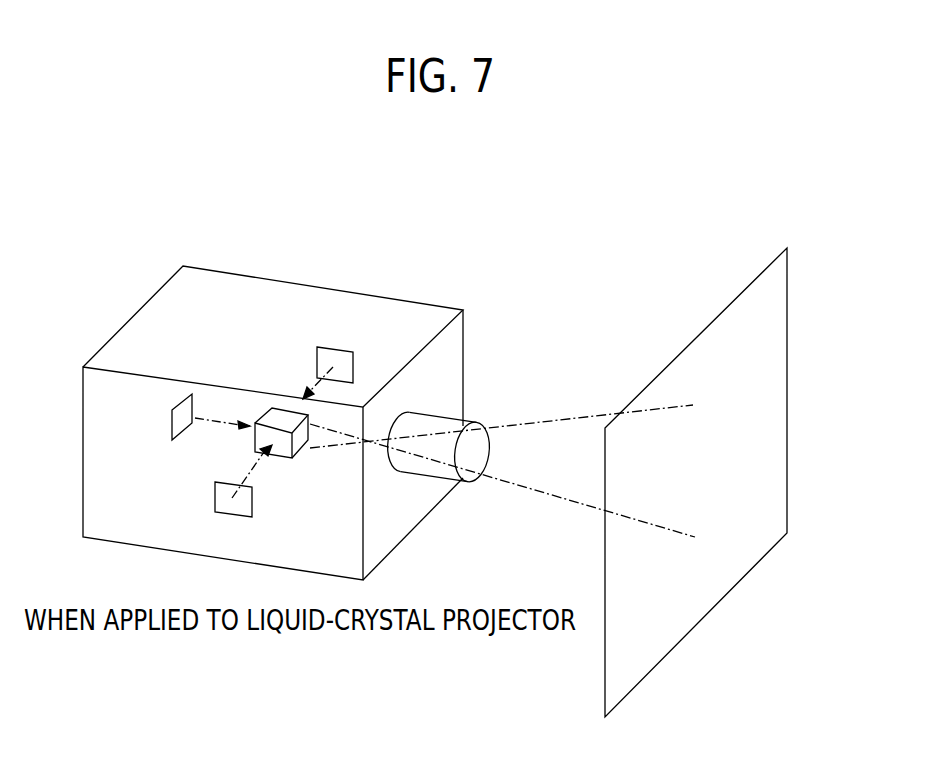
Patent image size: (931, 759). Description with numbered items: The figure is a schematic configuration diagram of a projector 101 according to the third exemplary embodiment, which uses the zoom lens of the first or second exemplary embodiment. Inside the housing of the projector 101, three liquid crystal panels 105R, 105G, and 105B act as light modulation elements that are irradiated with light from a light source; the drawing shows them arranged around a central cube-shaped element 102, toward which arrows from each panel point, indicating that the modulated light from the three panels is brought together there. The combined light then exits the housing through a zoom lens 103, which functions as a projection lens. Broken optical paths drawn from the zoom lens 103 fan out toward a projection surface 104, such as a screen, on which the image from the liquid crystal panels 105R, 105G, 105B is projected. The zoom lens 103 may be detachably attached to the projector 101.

The projector 101 is at (160, 290).
The cross dichroic prism 102 is at (291, 460).
The zoom lens 103 is at (443, 474).
The projection surface 104 is at (788, 340).
The liquid crystal panel 105G is at (172, 422).
The liquid crystal panel 105R is at (215, 498).
The liquid crystal panel 105B is at (352, 336).